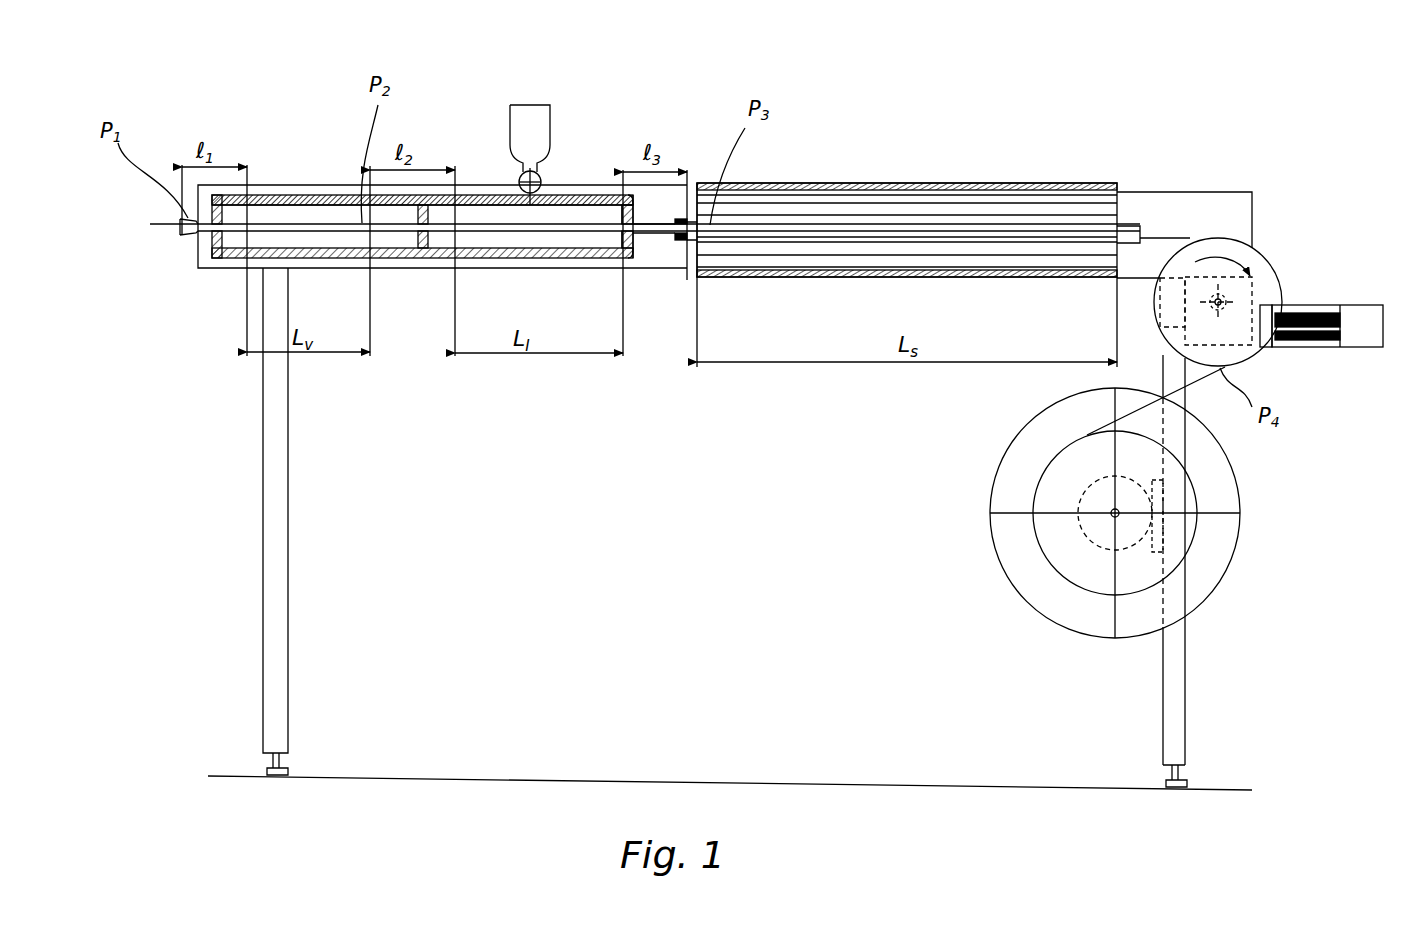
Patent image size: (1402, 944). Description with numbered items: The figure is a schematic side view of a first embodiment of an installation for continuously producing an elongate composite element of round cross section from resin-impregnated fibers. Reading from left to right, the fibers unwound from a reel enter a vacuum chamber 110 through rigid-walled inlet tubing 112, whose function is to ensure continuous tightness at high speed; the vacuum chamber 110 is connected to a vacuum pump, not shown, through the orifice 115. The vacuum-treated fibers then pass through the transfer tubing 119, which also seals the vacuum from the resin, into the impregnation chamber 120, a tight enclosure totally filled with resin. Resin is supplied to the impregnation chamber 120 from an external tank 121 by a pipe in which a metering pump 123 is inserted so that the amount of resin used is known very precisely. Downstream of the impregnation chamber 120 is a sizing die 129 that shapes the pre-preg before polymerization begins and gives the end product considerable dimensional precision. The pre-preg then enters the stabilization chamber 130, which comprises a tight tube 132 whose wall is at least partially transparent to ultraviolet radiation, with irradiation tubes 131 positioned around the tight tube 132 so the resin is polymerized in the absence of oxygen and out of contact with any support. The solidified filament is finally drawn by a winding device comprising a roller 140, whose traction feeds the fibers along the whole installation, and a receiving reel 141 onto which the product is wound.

The vacuum chamber 110 is at (285, 212).
The inlet tubing 112 is at (188, 232).
The orifice 115 is at (322, 256).
The transfer tubing 119 is at (407, 228).
The impregnation chamber 120 is at (545, 222).
The external tank 121 is at (522, 118).
The metering pump 123 is at (516, 176).
The sizing die 129 is at (655, 236).
The stabilization chamber 130 is at (918, 219).
The irradiation tubes 131 is at (783, 200).
The tight tube 132 is at (992, 218).
The roller 140 is at (1270, 280).
The receiving reel 141 is at (1210, 565).